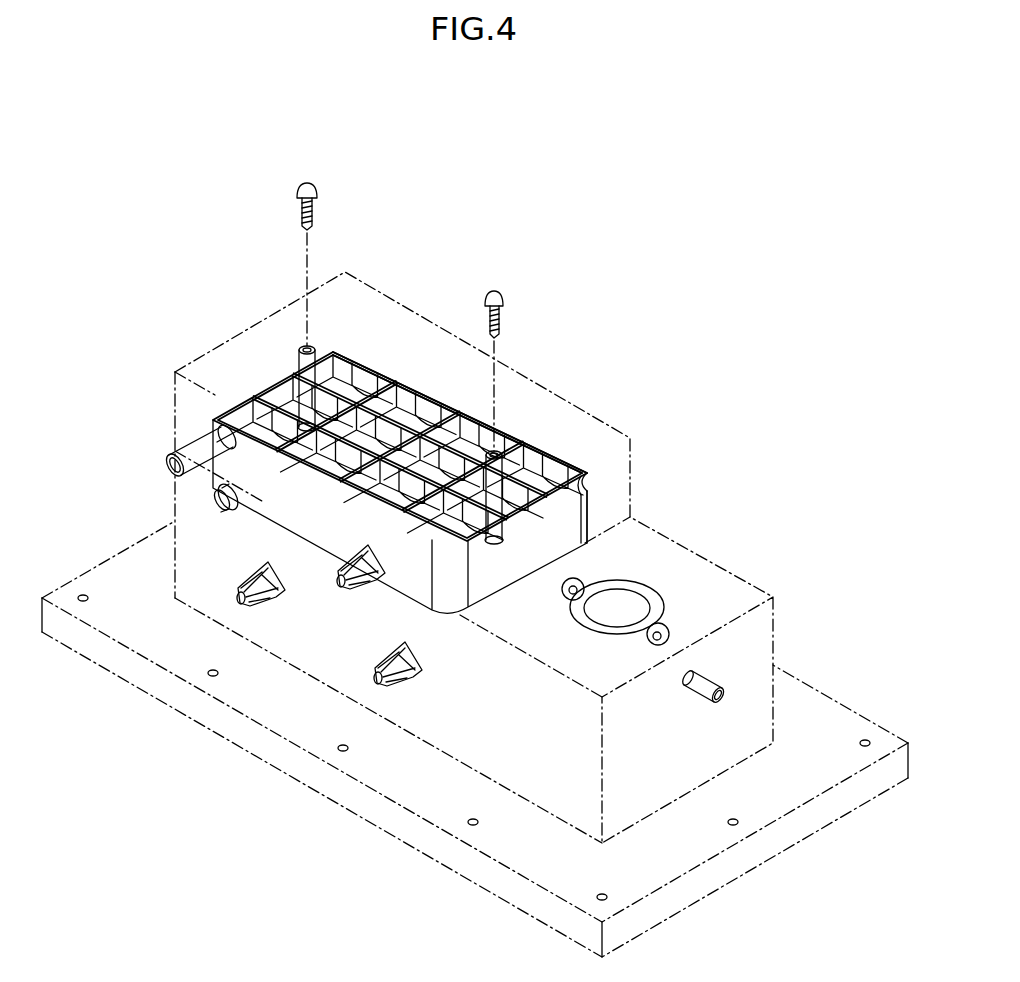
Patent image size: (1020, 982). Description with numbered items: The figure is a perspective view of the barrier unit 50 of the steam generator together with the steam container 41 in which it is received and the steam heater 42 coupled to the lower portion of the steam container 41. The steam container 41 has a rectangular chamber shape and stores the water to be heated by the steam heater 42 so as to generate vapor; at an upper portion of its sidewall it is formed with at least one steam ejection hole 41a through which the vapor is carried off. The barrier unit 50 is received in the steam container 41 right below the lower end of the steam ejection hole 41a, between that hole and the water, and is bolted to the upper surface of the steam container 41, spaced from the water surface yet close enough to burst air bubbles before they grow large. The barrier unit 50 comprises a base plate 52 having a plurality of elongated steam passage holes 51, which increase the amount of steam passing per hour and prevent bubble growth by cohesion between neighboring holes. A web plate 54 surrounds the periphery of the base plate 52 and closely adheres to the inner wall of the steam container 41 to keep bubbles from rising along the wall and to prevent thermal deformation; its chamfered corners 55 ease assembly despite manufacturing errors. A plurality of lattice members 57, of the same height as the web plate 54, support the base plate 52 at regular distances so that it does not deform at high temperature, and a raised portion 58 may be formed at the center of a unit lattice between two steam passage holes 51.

The steam container 41 is at (257, 327).
The steam ejection hole 41a is at (220, 490).
The steam heater 42 is at (835, 715).
The barrier unit 50 is at (560, 444).
The steam passage holes 51 is at (405, 413).
The base plate 52 is at (438, 418).
The web plate 54 is at (515, 433).
The chamfered corners 55 is at (590, 478).
The lattice members 57 is at (460, 447).
The raised portion 58 is at (448, 428).